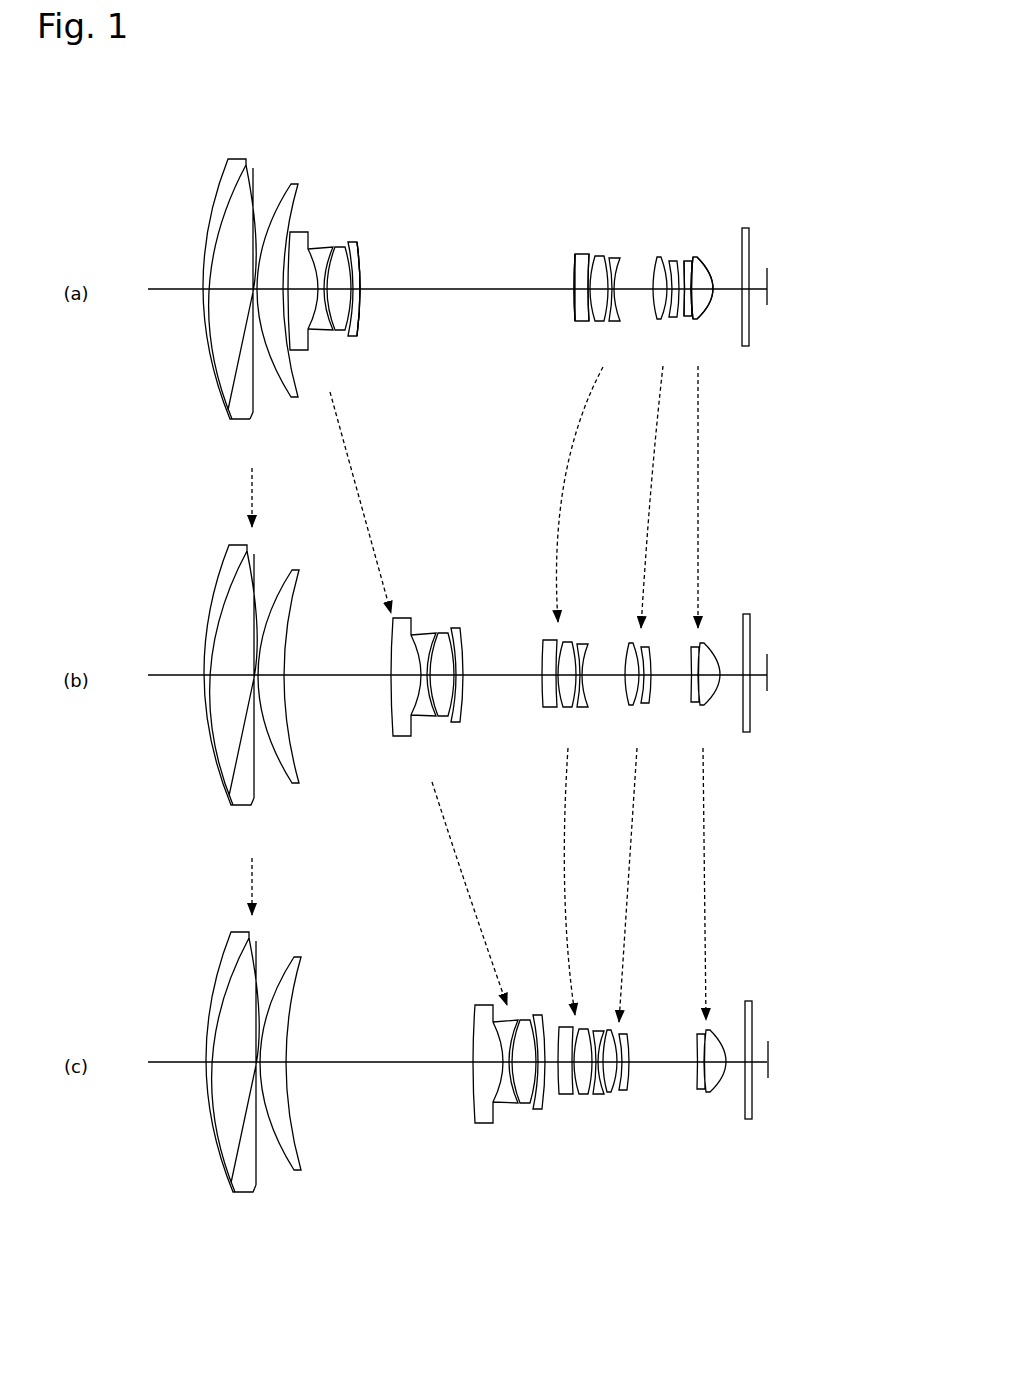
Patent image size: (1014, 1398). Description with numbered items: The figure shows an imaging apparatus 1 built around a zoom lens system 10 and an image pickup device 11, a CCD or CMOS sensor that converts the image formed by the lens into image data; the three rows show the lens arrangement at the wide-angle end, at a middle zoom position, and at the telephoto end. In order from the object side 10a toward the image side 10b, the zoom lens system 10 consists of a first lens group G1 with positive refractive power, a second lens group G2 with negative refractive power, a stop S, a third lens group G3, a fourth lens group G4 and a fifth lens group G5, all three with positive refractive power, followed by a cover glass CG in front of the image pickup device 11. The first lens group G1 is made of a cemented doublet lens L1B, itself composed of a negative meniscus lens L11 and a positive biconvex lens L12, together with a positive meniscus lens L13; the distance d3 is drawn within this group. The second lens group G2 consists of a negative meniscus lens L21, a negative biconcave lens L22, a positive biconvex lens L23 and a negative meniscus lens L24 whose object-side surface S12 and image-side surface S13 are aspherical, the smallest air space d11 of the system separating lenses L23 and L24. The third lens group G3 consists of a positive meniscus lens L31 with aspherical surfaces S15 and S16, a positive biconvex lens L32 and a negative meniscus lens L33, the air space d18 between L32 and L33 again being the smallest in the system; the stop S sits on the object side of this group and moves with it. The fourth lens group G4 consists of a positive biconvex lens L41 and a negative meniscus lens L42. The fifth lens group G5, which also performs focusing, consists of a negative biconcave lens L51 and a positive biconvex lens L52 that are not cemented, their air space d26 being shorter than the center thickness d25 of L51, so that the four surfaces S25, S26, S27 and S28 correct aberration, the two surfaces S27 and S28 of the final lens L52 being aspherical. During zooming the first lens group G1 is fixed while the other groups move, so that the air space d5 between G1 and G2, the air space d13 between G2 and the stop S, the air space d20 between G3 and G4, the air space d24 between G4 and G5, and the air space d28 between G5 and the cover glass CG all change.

The imaging apparatus 1 is at (487, 133).
The zoom lens system 10 is at (162, 185).
The object side 10a is at (177, 263).
The image side 10b is at (749, 165).
The image pickup device 11 is at (768, 279).
The cover glass CG is at (750, 268).
The stop S is at (540, 261).
The first lens group G1 is at (202, 424).
The second lens group G2 is at (298, 353).
The third lens group G3 is at (531, 639).
The fourth lens group G4 is at (642, 639).
The fifth lens group G5 is at (718, 642).
The cemented doublet lens L1B is at (185, 106).
The negative meniscus lens L11 is at (230, 159).
The positive biconvex lens L12 is at (253, 170).
The positive meniscus lens L13 is at (291, 183).
The negative meniscus lens L21 is at (308, 233).
The negative biconcave lens L22 is at (317, 247).
The positive biconvex lens L23 is at (337, 247).
The negative meniscus lens L24 is at (349, 243).
The positive meniscus lens L31 is at (562, 248).
The positive biconvex lens L32 is at (583, 233).
The negative meniscus lens L33 is at (602, 248).
The positive biconvex lens L41 is at (640, 232).
The negative meniscus lens L42 is at (658, 246).
The negative biconcave lens L51 is at (706, 231).
The positive biconvex lens L52 is at (725, 223).
The object-side surface of L24 S12 is at (360, 275).
The image-side surface of L24 S13 is at (360, 283).
The object-side surface of L31 S15 is at (536, 279).
The image-side surface of L31 S16 is at (540, 287).
The object-side surface of L51 S25 is at (672, 209).
The image-side surface of L51 S26 is at (695, 220).
The object-side surface of L52 S27 is at (739, 246).
The image-side surface of L52 S28 is at (748, 257).
The axial distance d3 is at (251, 293).
The air space between first and second lens groups d5 is at (393, 1062).
The air space between L23 and L24 d11 is at (357, 297).
The air space between second lens group and stop d13 is at (555, 1062).
The air space between L32 and L33 d18 is at (561, 316).
The air space between third and fourth lens groups d20 is at (608, 1062).
The air space between fourth and fifth lens groups d24 is at (671, 1062).
The center thickness of L51 d25 is at (692, 290).
The air space between L51 and L52 d26 is at (714, 296).
The air space between fifth lens group and cover glass d28 is at (739, 1140).